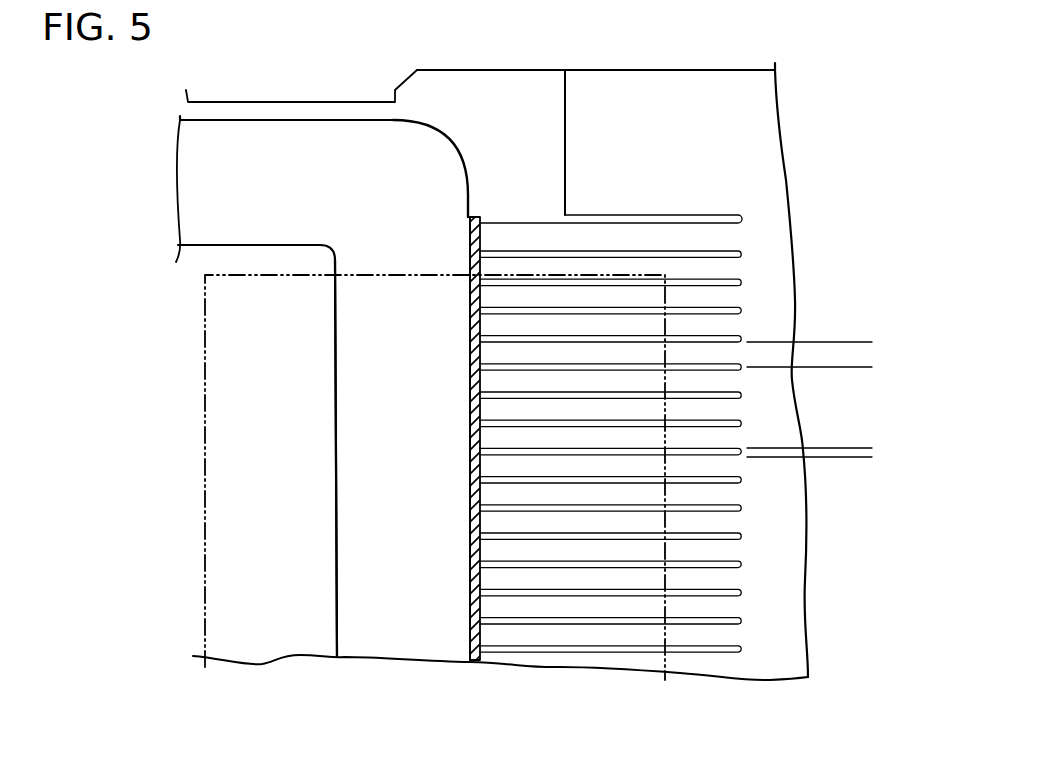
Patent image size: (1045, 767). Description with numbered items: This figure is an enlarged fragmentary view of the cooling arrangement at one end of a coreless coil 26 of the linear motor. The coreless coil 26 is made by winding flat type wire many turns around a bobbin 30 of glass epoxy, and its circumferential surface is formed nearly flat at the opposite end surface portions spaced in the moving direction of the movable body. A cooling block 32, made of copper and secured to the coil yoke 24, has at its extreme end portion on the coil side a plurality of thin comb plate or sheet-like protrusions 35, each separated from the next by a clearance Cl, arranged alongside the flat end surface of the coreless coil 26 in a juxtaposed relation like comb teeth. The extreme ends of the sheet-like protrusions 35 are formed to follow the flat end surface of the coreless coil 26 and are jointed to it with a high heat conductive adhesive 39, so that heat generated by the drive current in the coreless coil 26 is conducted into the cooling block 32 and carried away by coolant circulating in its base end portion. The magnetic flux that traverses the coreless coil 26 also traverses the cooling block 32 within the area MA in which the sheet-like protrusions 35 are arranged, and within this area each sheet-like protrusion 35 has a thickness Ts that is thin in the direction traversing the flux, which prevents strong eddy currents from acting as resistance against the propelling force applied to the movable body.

The coil yoke 24 is at (483, 113).
The coreless coil 26 is at (390, 345).
The bobbin 30 is at (278, 603).
The cooling block 32 is at (682, 120).
The sheet-like protrusion 35 is at (490, 228).
The high heat conductive adhesive 39 is at (465, 262).
The area MA is at (205, 450).
The thickness Ts is at (860, 318).
The clearance Cl is at (860, 425).